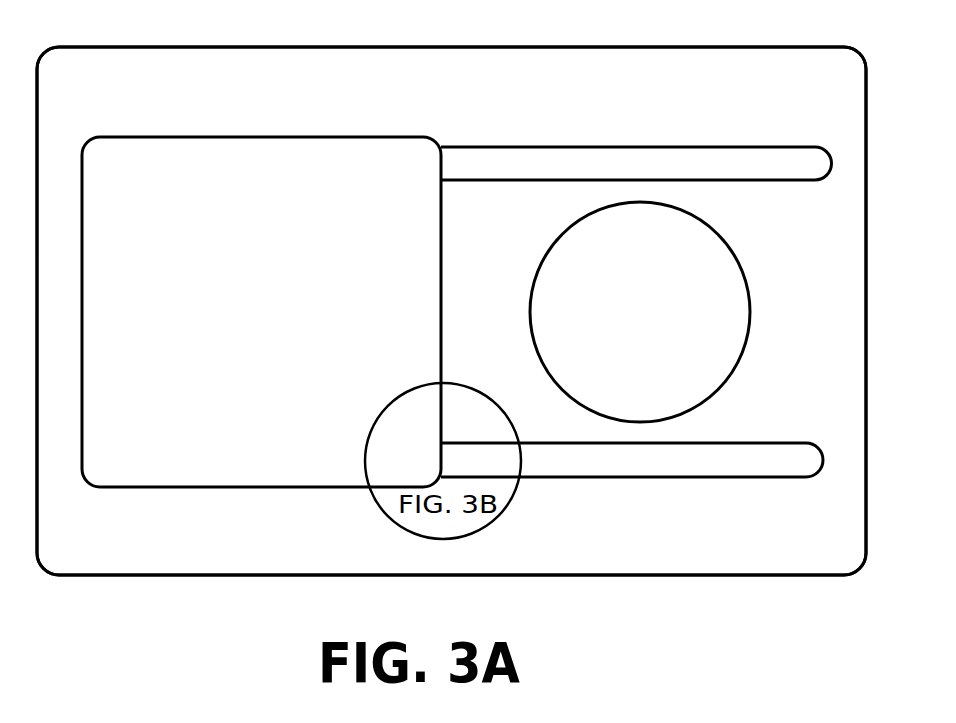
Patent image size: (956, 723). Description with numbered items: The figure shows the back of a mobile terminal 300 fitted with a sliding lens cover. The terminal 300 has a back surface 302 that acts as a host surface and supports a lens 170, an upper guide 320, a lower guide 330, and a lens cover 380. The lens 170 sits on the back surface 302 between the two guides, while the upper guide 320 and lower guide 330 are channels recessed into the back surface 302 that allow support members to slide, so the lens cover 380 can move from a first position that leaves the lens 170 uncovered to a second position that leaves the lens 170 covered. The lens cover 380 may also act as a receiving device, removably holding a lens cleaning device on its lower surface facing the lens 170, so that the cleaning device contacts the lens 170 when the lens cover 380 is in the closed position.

The terminal 300 is at (451, 287).
The back surface 302 is at (451, 297).
The upper guide 320 is at (636, 132).
The lower guide 330 is at (646, 437).
The lens 170 is at (680, 312).
The lens cover 380 is at (261, 287).